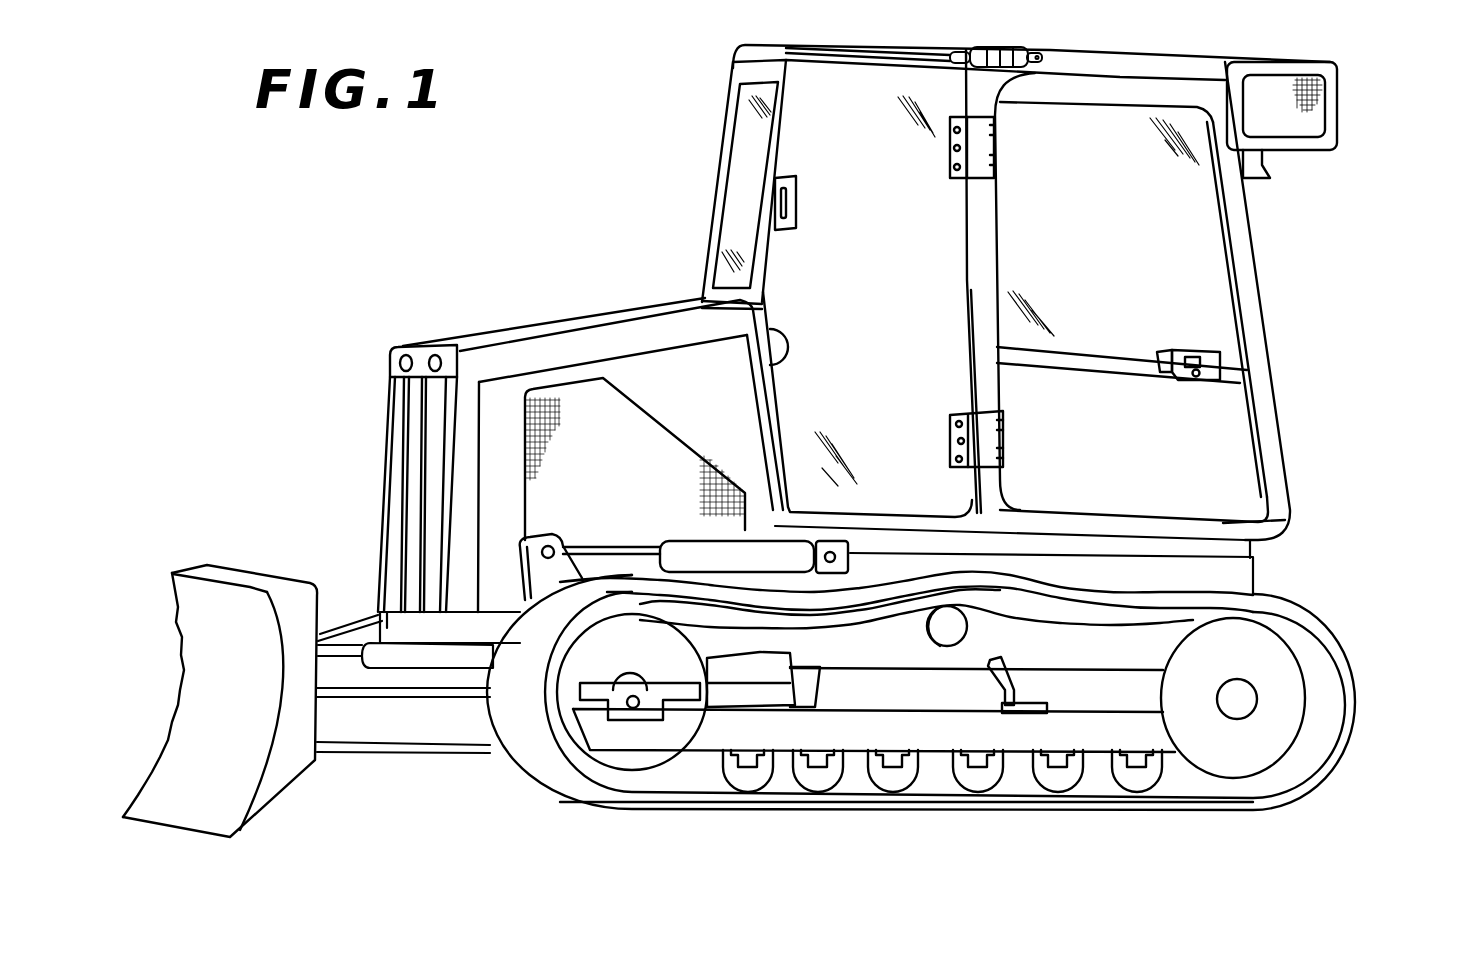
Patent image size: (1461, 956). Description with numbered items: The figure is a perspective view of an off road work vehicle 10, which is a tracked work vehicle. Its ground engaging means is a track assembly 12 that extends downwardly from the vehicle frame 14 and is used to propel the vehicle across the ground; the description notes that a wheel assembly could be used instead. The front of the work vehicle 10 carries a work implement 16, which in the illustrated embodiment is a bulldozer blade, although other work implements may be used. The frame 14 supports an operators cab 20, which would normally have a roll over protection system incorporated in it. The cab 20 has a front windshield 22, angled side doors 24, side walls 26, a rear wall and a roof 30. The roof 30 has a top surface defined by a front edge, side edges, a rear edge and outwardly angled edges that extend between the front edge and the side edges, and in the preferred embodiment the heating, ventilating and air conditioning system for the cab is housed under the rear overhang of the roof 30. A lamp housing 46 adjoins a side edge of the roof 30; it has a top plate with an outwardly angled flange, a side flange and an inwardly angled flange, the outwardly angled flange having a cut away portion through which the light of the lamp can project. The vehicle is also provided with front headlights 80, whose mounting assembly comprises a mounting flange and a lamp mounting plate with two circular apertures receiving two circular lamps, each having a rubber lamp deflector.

The work vehicle 10 is at (1388, 197).
The track assembly 12 is at (853, 745).
The vehicle frame 14 is at (726, 393).
The work implement 16 is at (246, 693).
The operators cab 20 is at (651, 185).
The front windshield 22 is at (745, 163).
The angled side doors 24 is at (890, 251).
The side walls 26 is at (1135, 251).
The roof 30 is at (1145, 52).
The lamp housing 46 is at (1006, 43).
The front headlights 80 is at (384, 358).